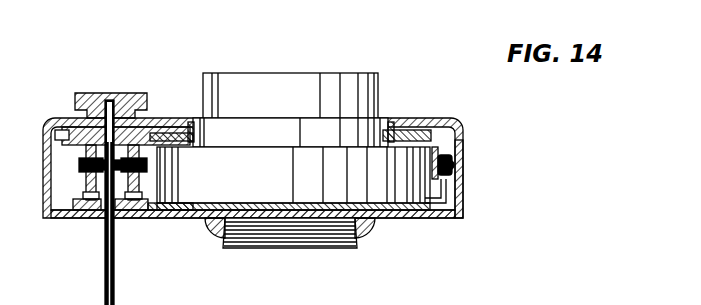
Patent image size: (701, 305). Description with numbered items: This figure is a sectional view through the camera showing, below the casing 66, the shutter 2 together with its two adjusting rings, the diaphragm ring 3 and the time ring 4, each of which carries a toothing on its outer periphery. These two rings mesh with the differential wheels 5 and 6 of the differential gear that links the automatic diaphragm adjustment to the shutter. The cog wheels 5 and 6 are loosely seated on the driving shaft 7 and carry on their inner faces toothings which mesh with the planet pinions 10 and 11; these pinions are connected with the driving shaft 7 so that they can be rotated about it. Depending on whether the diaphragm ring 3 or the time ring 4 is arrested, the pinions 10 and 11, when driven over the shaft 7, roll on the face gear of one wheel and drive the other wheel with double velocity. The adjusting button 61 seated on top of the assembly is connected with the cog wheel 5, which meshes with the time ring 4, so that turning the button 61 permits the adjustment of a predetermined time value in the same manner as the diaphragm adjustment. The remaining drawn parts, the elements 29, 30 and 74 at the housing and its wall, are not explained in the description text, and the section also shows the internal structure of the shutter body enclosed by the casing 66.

The shutter 2 is at (401, 219).
The diaphragm ring 3 is at (433, 219).
The time ring 4 is at (404, 130).
The cog wheel 5 is at (82, 118).
The cog wheel 6 is at (89, 219).
The shaft 7 is at (105, 285).
The pinion 10 is at (78, 188).
The pinion 11 is at (151, 219).
The terminal 29 is at (452, 173).
The inner wall 30 is at (437, 136).
The adjusting button 61 is at (136, 93).
The casing 66 is at (463, 143).
The housing shell 74 is at (60, 118).